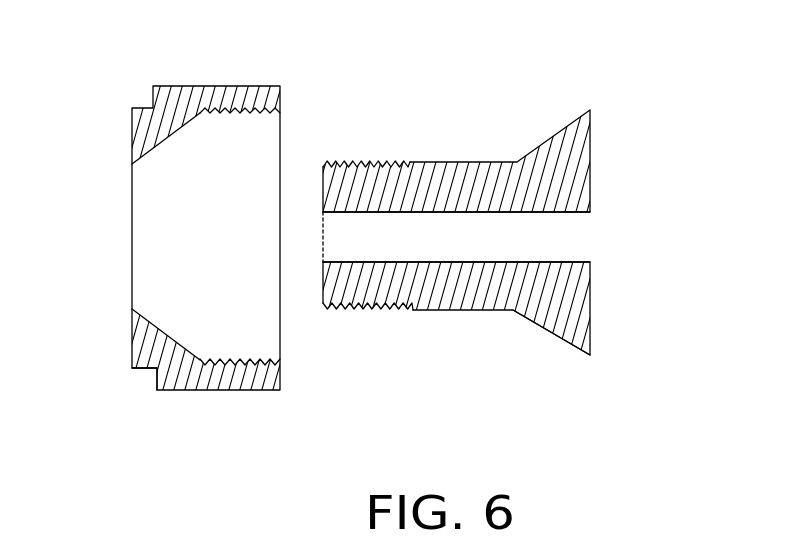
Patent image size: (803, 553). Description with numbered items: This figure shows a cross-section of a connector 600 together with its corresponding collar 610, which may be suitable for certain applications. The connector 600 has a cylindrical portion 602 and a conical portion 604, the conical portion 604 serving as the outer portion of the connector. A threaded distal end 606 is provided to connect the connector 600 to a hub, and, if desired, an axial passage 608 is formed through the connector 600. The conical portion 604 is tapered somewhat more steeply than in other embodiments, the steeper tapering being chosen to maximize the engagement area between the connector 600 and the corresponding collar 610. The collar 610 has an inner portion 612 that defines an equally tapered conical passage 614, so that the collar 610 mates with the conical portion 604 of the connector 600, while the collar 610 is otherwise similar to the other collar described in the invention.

The connector 600 is at (456, 162).
The cylindrical portion 602 is at (442, 312).
The conical portion 604 is at (537, 327).
The threaded distal end 606 is at (323, 188).
The axial passage 608 is at (481, 254).
The collar 610 is at (192, 90).
The inner portion 612 is at (145, 370).
The conical passage 614 is at (186, 260).